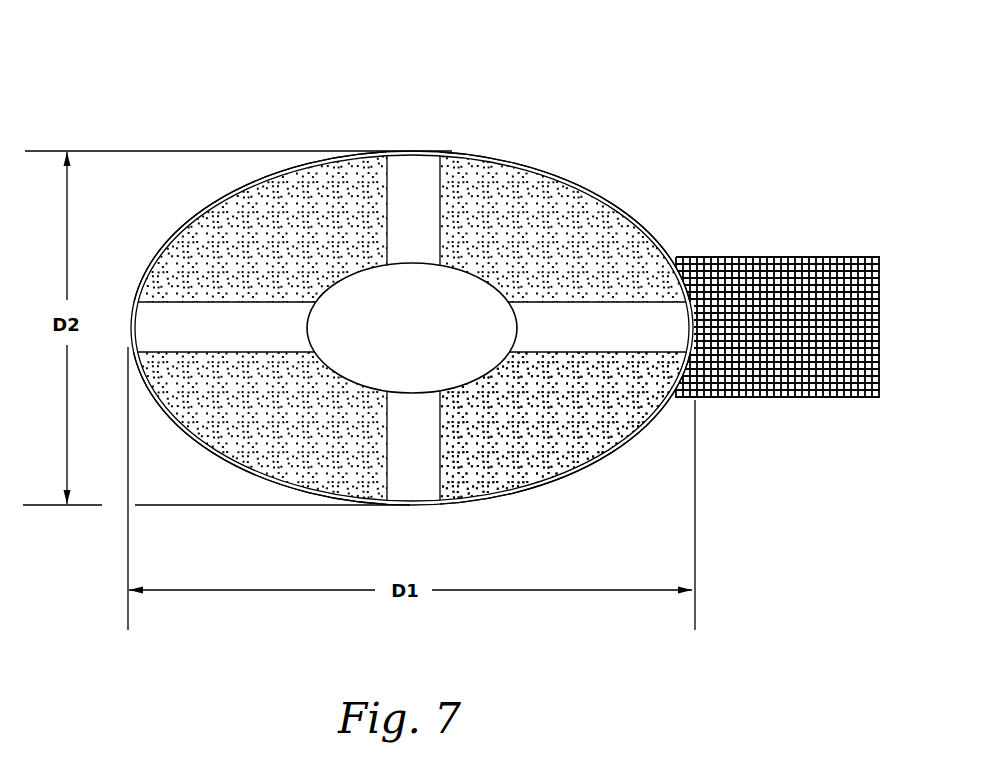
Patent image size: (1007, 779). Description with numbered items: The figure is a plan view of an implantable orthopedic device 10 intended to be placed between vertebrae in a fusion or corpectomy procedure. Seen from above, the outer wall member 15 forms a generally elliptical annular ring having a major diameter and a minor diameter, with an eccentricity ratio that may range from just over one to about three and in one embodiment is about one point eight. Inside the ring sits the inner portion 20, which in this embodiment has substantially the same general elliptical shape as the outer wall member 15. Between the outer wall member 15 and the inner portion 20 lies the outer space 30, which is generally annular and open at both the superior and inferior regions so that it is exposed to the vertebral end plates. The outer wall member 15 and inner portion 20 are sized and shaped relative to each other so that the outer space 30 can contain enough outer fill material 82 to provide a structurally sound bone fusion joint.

The implantable orthopedic device 10 is at (200, 55).
The outer wall member 15 is at (518, 155).
The inner portion 20 is at (350, 303).
The outer space 30 is at (572, 198).
The outer fill material 82 is at (565, 437).